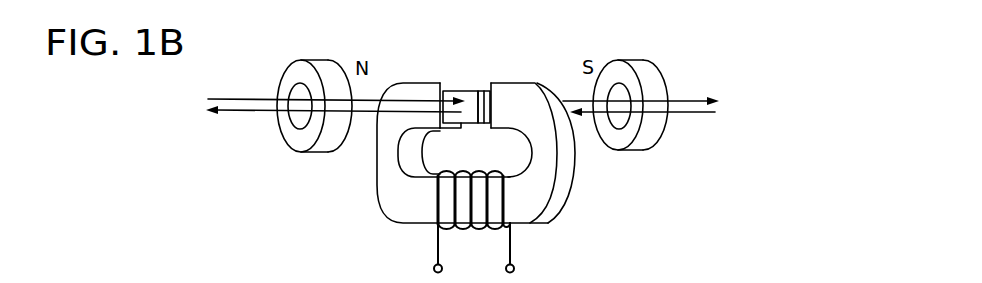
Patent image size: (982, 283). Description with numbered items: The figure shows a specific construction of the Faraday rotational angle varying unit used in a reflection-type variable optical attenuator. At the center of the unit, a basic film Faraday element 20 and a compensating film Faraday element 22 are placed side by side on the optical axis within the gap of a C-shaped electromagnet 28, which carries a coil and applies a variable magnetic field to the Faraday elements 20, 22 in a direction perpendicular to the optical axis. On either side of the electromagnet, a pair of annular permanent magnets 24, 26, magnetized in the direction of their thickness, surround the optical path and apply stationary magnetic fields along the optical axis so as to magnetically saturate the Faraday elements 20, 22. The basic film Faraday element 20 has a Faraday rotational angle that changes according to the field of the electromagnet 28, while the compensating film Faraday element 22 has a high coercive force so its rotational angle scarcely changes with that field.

The basic film Faraday element 20 is at (463, 93).
The compensating film Faraday element 22 is at (493, 84).
The permanent magnet 24 is at (300, 143).
The permanent magnet 26 is at (650, 143).
The C-shaped electromagnet 28 is at (397, 200).